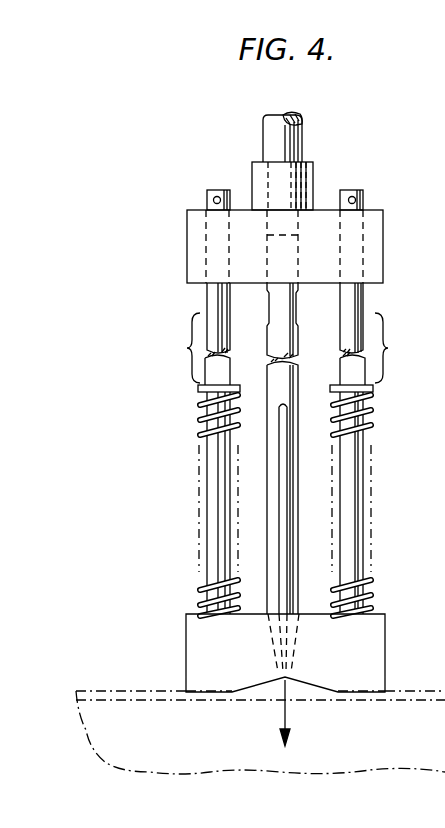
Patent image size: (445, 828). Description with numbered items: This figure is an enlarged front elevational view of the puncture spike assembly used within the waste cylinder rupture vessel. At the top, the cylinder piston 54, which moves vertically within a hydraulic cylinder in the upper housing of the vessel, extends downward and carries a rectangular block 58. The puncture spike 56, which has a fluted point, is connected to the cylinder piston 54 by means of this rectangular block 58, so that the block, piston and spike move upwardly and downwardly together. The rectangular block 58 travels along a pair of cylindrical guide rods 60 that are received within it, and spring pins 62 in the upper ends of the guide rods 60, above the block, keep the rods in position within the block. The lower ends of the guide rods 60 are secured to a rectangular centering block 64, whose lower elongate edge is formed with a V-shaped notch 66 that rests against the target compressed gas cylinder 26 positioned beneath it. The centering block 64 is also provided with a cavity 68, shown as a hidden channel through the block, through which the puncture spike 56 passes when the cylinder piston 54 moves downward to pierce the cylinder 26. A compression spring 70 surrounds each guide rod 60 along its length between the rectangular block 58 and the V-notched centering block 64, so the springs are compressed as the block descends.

The target compressed gas cylinder 26 is at (140, 691).
The cylinder piston 54 is at (289, 145).
The puncture spike 56 is at (293, 487).
The rectangular block 58 is at (373, 252).
The cylindrical guide rods 60 is at (207, 297).
The spring pins 62 is at (207, 200).
The rectangular centering block 64 is at (378, 648).
The V-shaped notch 66 is at (297, 683).
The cavity 68 is at (262, 700).
The compression spring 70 is at (198, 418).